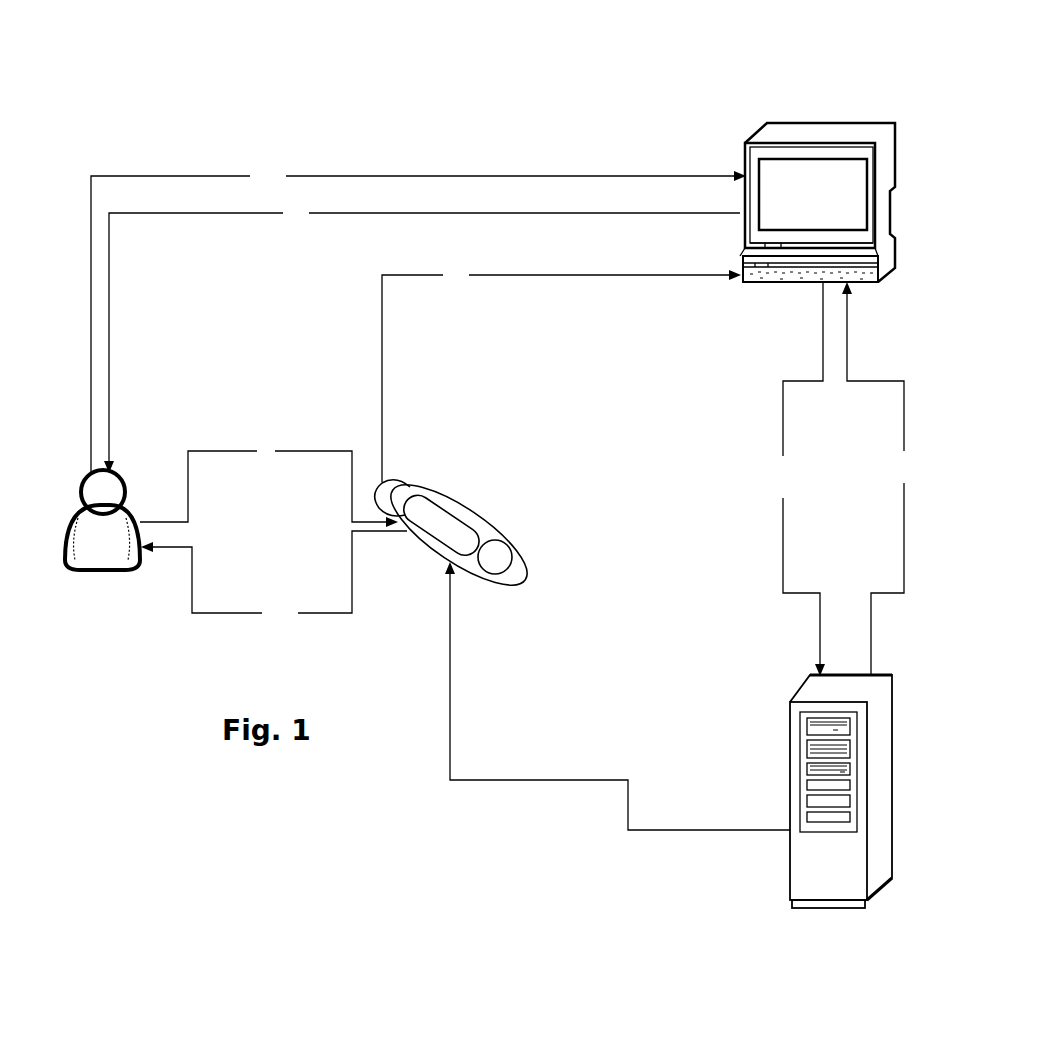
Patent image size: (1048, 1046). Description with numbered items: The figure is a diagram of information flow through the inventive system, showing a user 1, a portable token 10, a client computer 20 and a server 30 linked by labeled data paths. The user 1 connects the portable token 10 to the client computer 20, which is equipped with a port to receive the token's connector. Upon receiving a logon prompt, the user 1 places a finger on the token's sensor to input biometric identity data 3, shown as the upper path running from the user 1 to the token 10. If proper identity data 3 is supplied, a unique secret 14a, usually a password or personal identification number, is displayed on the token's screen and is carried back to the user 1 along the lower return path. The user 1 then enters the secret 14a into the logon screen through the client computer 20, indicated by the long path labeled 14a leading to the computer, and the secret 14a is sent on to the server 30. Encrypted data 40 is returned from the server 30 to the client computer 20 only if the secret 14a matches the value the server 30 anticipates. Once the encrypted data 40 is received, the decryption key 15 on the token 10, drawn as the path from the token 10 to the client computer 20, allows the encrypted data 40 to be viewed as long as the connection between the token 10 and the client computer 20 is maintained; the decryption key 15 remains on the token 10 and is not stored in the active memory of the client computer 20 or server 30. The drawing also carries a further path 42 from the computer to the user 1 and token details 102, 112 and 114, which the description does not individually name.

The user 1 is at (102, 536).
The biometric identity data 3 is at (269, 483).
The portable token 10 is at (582, 621).
The secret 14a is at (458, 420).
The decryption key 15 is at (561, 373).
The client computer 20 is at (878, 157).
The server 30 is at (878, 792).
The encrypted data 40 is at (879, 478).
The feedback signal 42 is at (422, 337).
The clip 102 is at (405, 485).
The button 112 is at (512, 540).
The display 114 is at (465, 502).